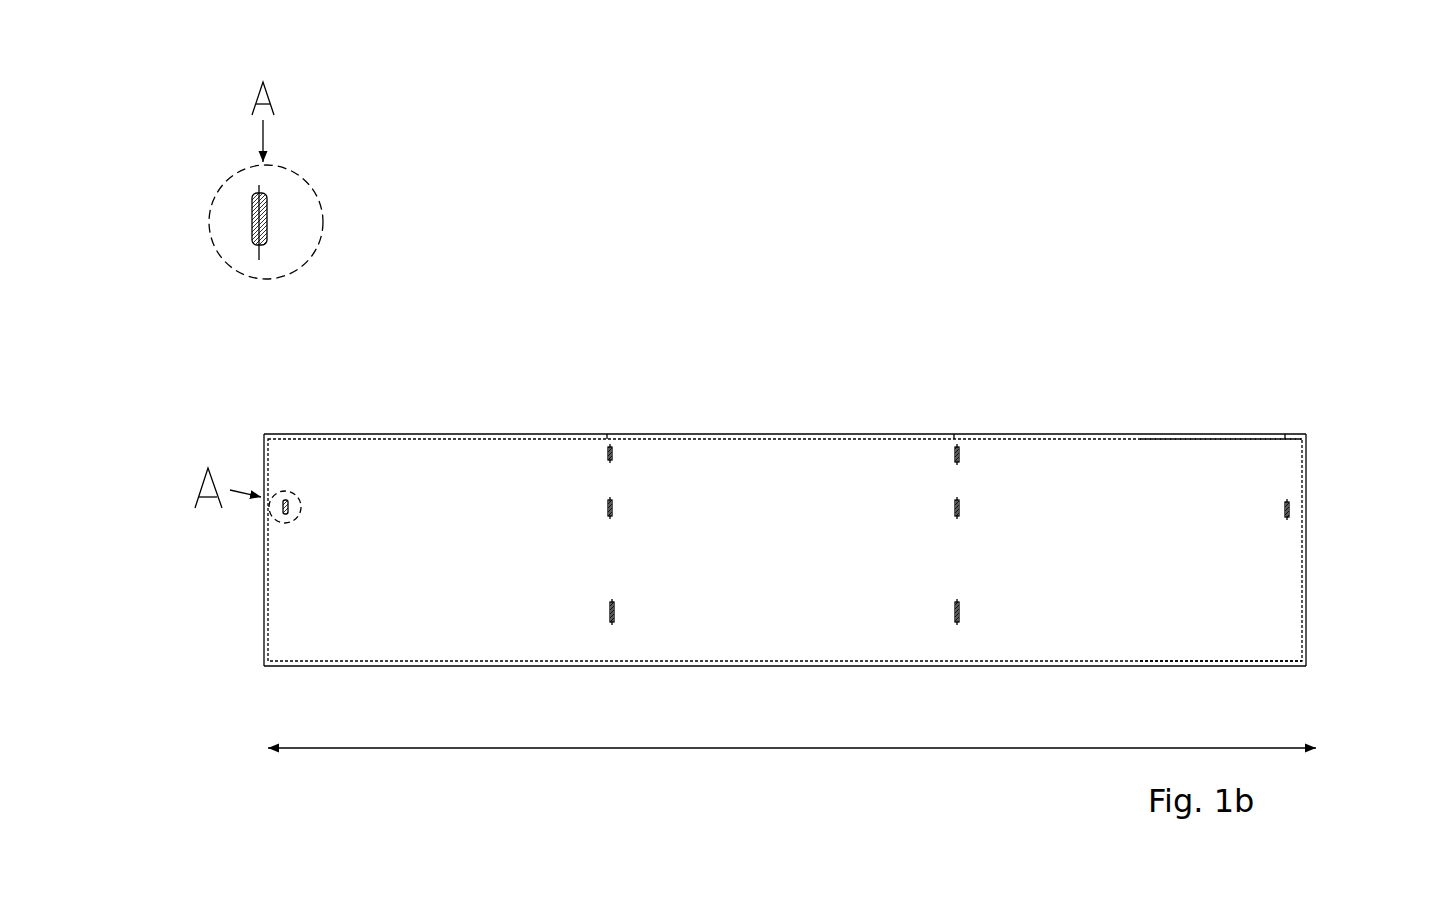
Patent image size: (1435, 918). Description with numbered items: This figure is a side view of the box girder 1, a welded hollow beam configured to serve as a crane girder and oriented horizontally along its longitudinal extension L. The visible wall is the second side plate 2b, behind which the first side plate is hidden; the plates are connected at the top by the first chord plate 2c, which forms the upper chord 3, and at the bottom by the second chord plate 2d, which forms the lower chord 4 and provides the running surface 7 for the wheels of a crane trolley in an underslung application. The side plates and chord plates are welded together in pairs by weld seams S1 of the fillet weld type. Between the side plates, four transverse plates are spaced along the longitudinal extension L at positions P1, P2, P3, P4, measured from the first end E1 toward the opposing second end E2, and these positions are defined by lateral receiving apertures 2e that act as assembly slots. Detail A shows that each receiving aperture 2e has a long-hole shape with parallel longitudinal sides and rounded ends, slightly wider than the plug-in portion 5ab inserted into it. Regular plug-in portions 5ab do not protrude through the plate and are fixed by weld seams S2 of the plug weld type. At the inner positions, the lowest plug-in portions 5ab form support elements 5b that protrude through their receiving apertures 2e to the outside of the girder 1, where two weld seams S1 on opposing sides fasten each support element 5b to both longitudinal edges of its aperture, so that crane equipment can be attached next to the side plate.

The box girder 1 is at (690, 312).
The second side plate 2b is at (352, 605).
The first chord plate 2c is at (785, 376).
The upper chord 3 is at (423, 431).
The second chord plate 2d is at (716, 677).
The lower chord 4 is at (298, 661).
The lateral receiving aperture 2e is at (950, 610).
The weld seam of plug weld type S2 is at (273, 218).
The weld seam of fillet weld type S1 is at (1138, 440).
The plug-in portion 5ab is at (252, 223).
The support element 5b is at (611, 618).
The running surface 7 is at (1268, 657).
The first position P1 is at (282, 426).
The second position P2 is at (607, 423).
The third position P3 is at (954, 423).
The fourth position P4 is at (1285, 426).
The first end E1 is at (237, 565).
The second end E2 is at (1322, 558).
The longitudinal extension L is at (792, 768).